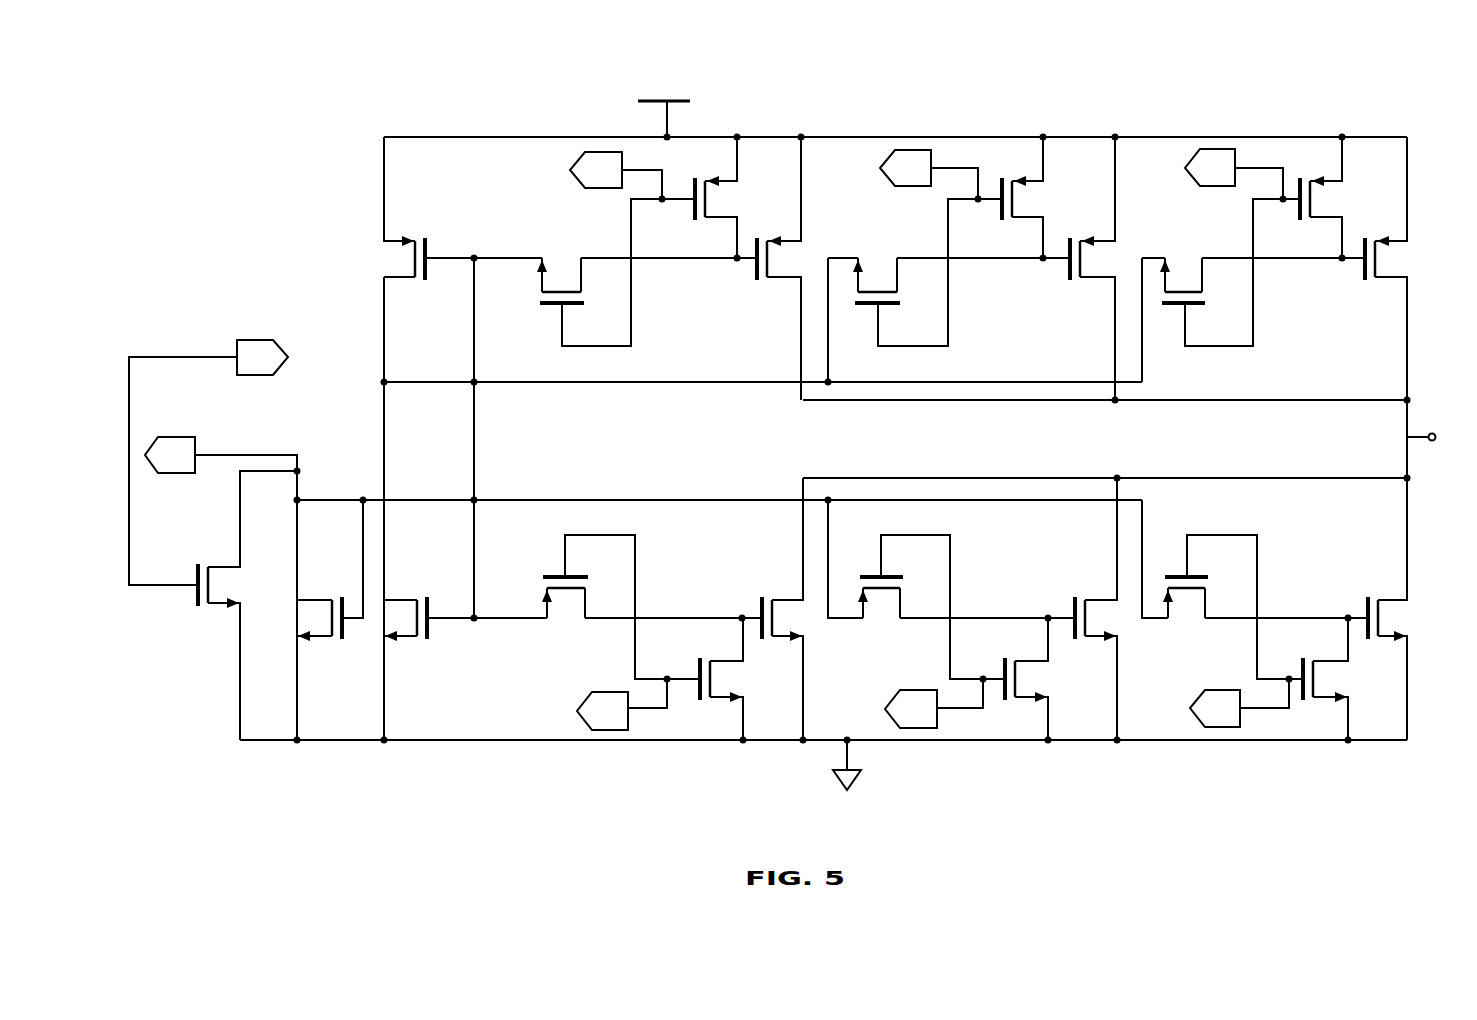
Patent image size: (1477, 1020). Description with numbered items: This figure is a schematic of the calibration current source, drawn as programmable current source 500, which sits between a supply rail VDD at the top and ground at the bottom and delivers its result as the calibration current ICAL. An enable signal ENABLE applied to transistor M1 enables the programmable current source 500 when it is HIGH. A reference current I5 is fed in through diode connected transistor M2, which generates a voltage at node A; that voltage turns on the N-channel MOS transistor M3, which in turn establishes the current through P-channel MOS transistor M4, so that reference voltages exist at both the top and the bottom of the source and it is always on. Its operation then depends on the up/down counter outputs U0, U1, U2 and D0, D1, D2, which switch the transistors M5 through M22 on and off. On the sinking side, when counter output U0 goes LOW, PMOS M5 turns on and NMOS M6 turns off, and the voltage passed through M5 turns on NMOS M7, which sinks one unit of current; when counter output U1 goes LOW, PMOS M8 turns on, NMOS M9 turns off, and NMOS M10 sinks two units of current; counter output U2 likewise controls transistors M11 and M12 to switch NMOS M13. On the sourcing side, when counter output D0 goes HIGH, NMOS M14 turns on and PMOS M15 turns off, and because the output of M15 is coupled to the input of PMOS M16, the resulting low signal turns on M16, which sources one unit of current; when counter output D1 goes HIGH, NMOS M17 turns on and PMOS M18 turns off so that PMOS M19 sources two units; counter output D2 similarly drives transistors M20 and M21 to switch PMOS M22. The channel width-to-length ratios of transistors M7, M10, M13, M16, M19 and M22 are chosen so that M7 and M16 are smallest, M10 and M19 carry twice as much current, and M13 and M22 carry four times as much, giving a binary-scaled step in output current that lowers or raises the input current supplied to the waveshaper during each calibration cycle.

The programmable current source 500 is at (521, 808).
The supply voltage VDD is at (664, 105).
The calibration current output ICAL is at (1440, 420).
The node A is at (474, 438).
The enable signal ENABLE is at (214, 446).
The reference current I5 is at (221, 438).
The transistor M1 is at (224, 566).
The diode connected transistor M2 is at (312, 596).
The N-channel MOS transistor M3 is at (398, 597).
The P-channel MOS transistor M4 is at (396, 240).
The PMOS transistor M5 is at (584, 606).
The NMOS transistor M6 is at (726, 660).
The NMOS transistor M7 is at (783, 600).
The PMOS transistor M8 is at (900, 602).
The NMOS transistor M9 is at (1034, 657).
The NMOS transistor M10 is at (1100, 598).
The transistor M11 is at (1205, 602).
The transistor M12 is at (1328, 658).
The NMOS transistor M13 is at (1392, 598).
The NMOS transistor M14 is at (581, 275).
The PMOS transistor M15 is at (716, 222).
The PMOS transistor M16 is at (777, 282).
The NMOS transistor M17 is at (897, 275).
The PMOS transistor M18 is at (1028, 222).
The PMOS transistor M19 is at (1093, 282).
The transistor M20 is at (1202, 275).
The transistor M21 is at (1326, 222).
The PMOS transistor M22 is at (1398, 282).
The counter output D0 is at (583, 188).
The counter output D1 is at (896, 186).
The counter output D2 is at (1201, 186).
The counter output U0 is at (590, 690).
The counter output U1 is at (910, 690).
The counter output U2 is at (1205, 690).